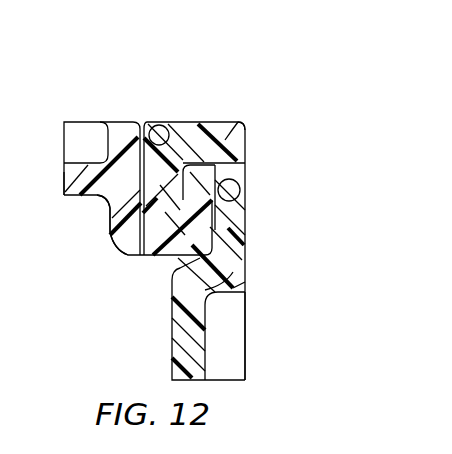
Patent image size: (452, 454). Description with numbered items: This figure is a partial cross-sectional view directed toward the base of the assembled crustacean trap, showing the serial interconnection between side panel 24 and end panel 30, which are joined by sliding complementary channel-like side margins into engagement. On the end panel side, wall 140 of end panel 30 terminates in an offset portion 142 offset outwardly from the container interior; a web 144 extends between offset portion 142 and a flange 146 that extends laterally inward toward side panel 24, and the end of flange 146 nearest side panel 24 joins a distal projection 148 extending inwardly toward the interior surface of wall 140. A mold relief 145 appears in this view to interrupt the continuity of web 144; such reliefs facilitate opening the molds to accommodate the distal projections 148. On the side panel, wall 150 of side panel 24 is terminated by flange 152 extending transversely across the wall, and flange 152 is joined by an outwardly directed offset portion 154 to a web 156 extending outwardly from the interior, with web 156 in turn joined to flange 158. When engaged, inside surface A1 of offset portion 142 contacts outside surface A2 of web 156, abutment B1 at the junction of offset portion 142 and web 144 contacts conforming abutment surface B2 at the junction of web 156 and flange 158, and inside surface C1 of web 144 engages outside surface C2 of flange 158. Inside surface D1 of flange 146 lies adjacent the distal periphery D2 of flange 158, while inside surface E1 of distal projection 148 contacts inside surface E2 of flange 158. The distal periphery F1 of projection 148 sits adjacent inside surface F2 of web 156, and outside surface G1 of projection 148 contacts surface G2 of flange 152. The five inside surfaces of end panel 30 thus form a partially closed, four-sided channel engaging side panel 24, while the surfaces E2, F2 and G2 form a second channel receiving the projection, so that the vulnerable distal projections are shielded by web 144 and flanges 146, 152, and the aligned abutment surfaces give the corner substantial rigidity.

The flange 152 is at (117, 122).
The side panel 24 is at (70, 122).
The wall 150 is at (66, 182).
The surface of flange G2 is at (98, 203).
The inside surface of web F2 is at (111, 237).
The offset portion 154 is at (113, 257).
The distal projection 148 is at (160, 122).
The outside surface of projection G1 is at (159, 135).
The inside surface of flange D1 is at (200, 125).
The flange 146 is at (206, 122).
The inside surface of distal projection E1 is at (233, 125).
The distal periphery of flange D2 is at (241, 127).
The inside surface of web C1 is at (211, 197).
The flange 158 is at (246, 177).
The mold relief 145 is at (246, 210).
The web 144 is at (246, 223).
The outside surface of flange C2 is at (246, 243).
The abutment surface B2 is at (244, 253).
The distal periphery of projection F1 is at (145, 232).
The inside surface of flange E2 is at (150, 248).
The outside surface of web A2 is at (162, 260).
The offset portion 142 is at (247, 291).
The abutment B1 is at (248, 298).
The web 156 is at (168, 268).
The inside surface of offset portion A1 is at (172, 302).
The wall 140 is at (185, 322).
The end panel 30 is at (247, 342).